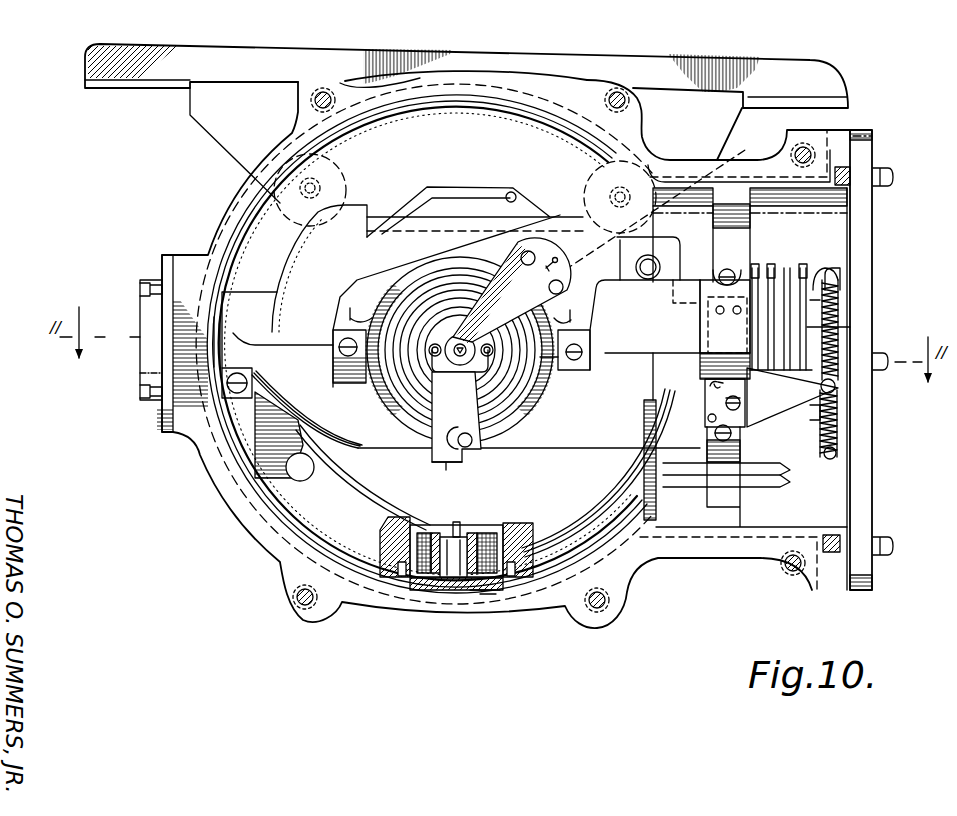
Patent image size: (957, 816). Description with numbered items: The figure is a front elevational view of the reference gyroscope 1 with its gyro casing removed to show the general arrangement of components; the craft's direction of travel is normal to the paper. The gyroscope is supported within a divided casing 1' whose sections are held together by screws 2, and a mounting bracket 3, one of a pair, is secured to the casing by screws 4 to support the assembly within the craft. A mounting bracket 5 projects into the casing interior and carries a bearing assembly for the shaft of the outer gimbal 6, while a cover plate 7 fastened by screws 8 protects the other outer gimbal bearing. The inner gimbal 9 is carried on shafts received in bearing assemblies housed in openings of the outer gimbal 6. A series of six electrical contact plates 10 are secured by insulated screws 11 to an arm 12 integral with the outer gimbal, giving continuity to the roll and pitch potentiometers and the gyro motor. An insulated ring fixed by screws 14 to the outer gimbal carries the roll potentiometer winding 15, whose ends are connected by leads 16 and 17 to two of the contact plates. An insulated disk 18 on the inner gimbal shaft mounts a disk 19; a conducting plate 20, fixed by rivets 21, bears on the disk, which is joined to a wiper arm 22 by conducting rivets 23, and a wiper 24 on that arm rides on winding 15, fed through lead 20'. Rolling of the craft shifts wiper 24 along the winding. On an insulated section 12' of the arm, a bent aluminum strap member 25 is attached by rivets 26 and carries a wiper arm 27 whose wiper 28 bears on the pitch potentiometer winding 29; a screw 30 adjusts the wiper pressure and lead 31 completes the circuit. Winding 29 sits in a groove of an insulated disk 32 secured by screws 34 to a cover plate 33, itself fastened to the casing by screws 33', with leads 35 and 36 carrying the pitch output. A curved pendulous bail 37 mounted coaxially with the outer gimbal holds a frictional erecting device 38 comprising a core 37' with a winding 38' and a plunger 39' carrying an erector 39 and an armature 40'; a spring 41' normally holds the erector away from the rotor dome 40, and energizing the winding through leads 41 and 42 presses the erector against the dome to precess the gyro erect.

The reference gyroscope 1 is at (424, 344).
The divided casing 1' is at (506, 354).
The screws 2 is at (311, 100).
The mounting bracket 3 is at (220, 48).
The screws 4 is at (322, 190).
The mounting bracket 5 is at (730, 198).
The outer gimbal 6 is at (286, 234).
The cover plate 7 is at (159, 343).
The screws 8 is at (140, 291).
The inner gimbal 9 is at (466, 200).
The electrical contact plates 10 is at (770, 266).
The insulated screws 11 is at (840, 329).
The arm 12 is at (673, 295).
The insulated section 12' is at (707, 356).
The screws 14 is at (343, 352).
The potentiometer winding 15 is at (386, 430).
The lead 16 is at (352, 312).
The lead 17 is at (594, 329).
The insulated disk 18 is at (456, 417).
The disk 19 is at (452, 323).
The conducting plate 20 is at (512, 297).
The lead 20' is at (566, 251).
The rivets 21 is at (532, 254).
The wiper arm 22 is at (437, 465).
The conducting rivets 23 is at (435, 345).
The wiper 24 is at (469, 451).
The strap member 25 is at (705, 421).
The rivets 26 is at (733, 313).
The wiper arm 27 is at (792, 397).
The wiper 28 is at (838, 410).
The potentiometer winding 29 is at (836, 456).
The screw 30 is at (737, 418).
The lead 31 is at (730, 383).
The insulated disk 32 is at (842, 283).
The cover plate 33 is at (870, 360).
The screws 33' is at (902, 359).
The screws 34 is at (813, 420).
The lead 35 is at (829, 275).
The lead 36 is at (819, 283).
The pendulous bail 37 is at (427, 344).
The core 37' is at (469, 525).
The frictional erecting device 38 is at (442, 594).
The winding 38' is at (532, 550).
The erector 39 is at (455, 527).
The plunger 39' is at (377, 546).
The rotor dome 40 is at (598, 473).
The armature 40' is at (426, 608).
The lead 41 is at (740, 492).
The spring 41' is at (484, 620).
The lead 42 is at (789, 474).